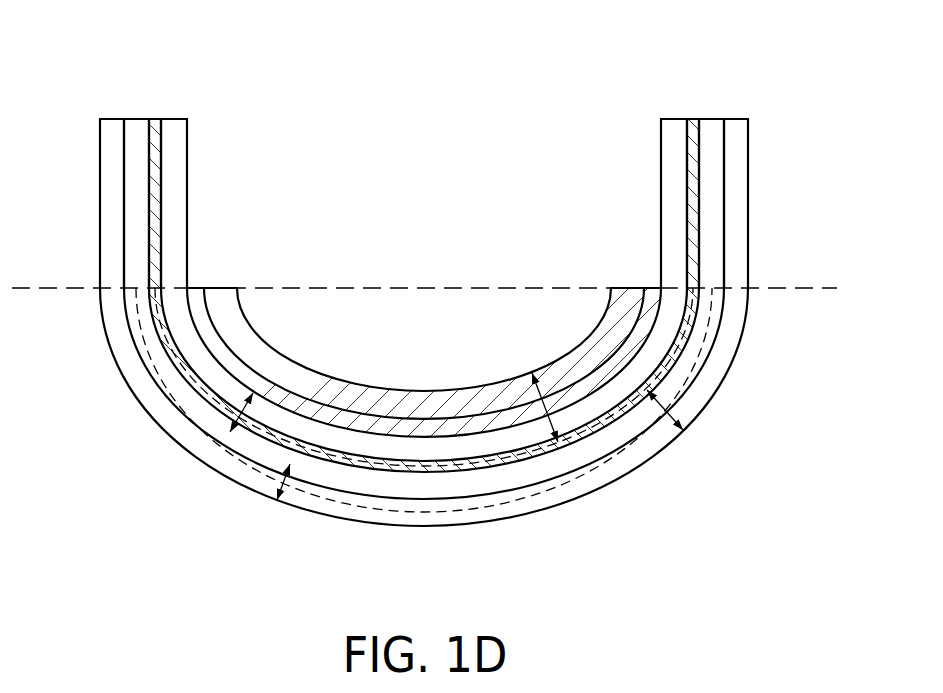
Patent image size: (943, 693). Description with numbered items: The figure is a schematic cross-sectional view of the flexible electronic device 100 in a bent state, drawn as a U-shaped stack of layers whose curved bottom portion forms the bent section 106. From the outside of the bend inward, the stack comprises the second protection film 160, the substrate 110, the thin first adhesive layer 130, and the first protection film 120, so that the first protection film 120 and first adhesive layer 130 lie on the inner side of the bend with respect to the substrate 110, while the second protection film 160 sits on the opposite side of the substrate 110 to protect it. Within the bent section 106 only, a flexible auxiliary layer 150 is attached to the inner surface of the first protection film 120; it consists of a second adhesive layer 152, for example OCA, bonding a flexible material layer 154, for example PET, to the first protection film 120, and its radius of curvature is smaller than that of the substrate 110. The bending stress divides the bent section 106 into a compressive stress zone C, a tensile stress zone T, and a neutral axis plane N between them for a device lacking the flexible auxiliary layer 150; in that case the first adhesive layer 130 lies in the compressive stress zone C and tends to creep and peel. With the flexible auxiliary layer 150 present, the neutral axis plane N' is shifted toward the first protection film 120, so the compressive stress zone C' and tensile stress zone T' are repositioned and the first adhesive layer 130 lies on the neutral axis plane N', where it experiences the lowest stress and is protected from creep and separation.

The flexible electronic device 100 is at (471, 290).
The bent section 106 is at (804, 278).
The substrate 110 is at (710, 138).
The first protection film 120 is at (672, 138).
The first adhesive layer 130 is at (693, 138).
The flexible auxiliary layer 150 is at (492, 355).
The second adhesive layer 152 is at (342, 420).
The flexible material layer 154 is at (406, 400).
The second protection film 160 is at (735, 138).
The neutral axis plane N is at (386, 400).
The neutral axis plane N' is at (478, 377).
The compressive stress zone C is at (203, 445).
The compressive stress zone C' is at (537, 357).
The tensile stress zone T is at (254, 508).
The tensile stress zone T' is at (697, 433).